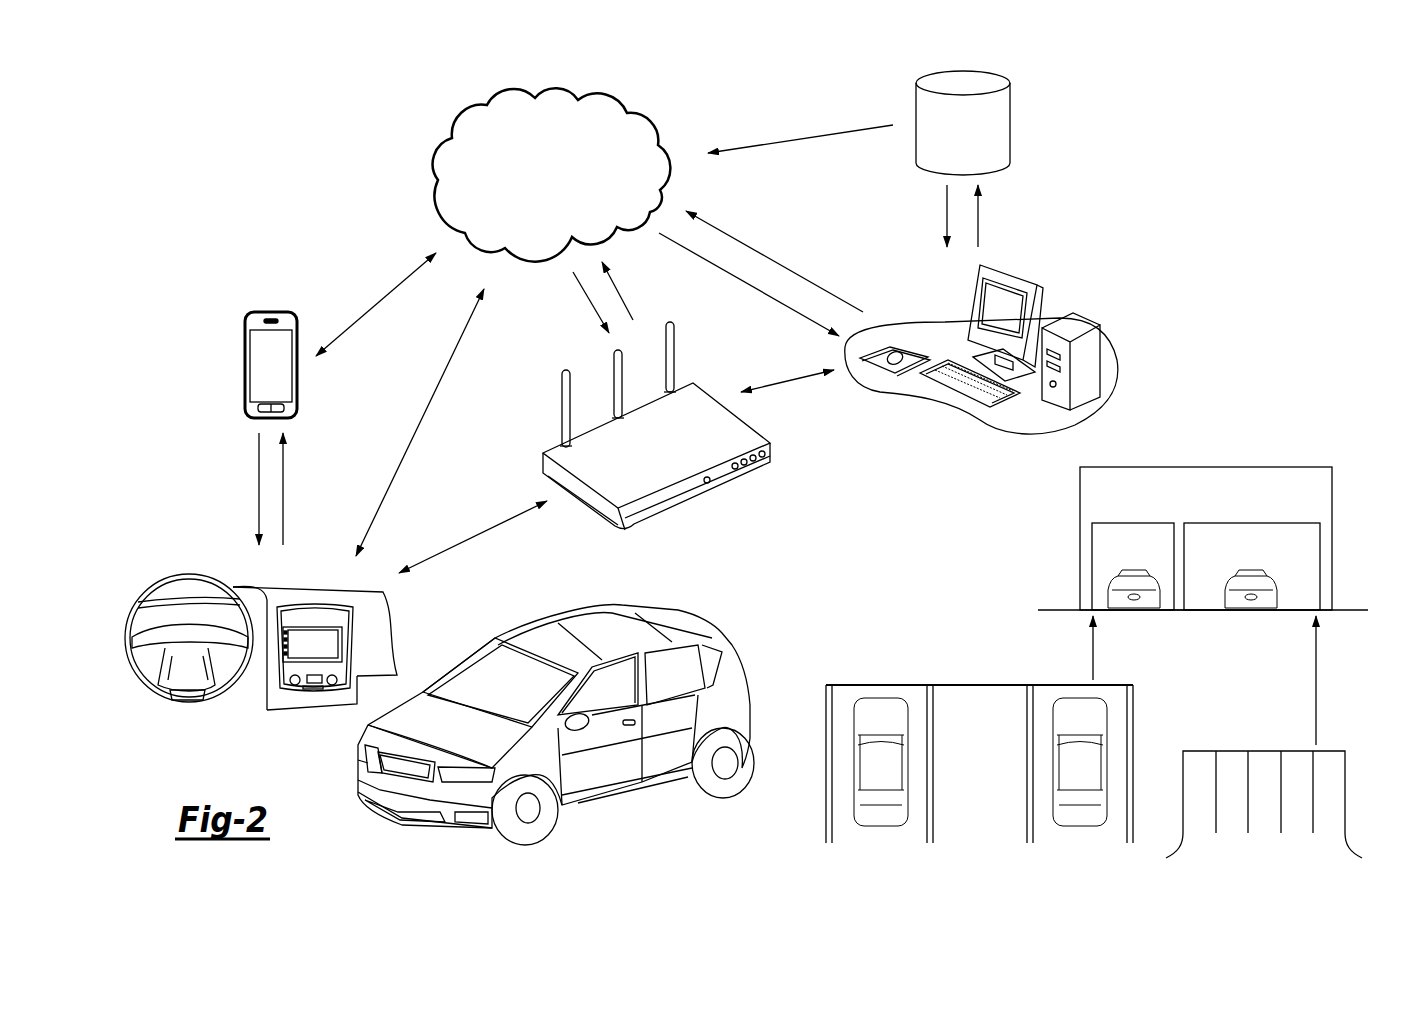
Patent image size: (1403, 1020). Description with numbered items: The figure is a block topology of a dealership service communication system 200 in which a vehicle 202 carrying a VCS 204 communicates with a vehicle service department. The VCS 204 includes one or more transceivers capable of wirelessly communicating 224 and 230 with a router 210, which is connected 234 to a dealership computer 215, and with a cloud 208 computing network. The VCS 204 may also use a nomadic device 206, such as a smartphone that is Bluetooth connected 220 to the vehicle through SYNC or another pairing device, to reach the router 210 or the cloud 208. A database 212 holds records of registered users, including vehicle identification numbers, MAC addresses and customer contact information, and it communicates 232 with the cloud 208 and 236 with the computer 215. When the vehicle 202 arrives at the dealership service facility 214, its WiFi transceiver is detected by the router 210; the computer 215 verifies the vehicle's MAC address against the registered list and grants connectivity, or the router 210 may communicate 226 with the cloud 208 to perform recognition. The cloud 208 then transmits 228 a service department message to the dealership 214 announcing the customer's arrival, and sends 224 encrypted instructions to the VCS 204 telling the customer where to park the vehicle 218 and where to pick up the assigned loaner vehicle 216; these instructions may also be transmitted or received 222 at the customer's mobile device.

The dealership service communication system 200 is at (278, 153).
The vehicle 202 is at (690, 612).
The VCS 204 is at (396, 615).
The nomadic device 206 is at (271, 312).
The cloud 208 is at (458, 118).
The router 210 is at (682, 505).
The database 212 is at (1010, 125).
The dealership service facility 214 is at (1203, 467).
The computer 215 is at (1020, 277).
The loaner vehicle 216 is at (980, 685).
The vehicle parking location 218 is at (1265, 750).
The Bluetooth connection 220 is at (270, 480).
The mobile device communication 222 is at (386, 294).
The wireless communication to VCS 224 is at (440, 402).
The router-cloud communication 226 is at (584, 296).
The service department message transmission 228 is at (756, 268).
The wireless communication to router 230 is at (490, 522).
The database-cloud communication 232 is at (810, 137).
The router-computer connection 234 is at (797, 380).
The database-computer communication 236 is at (963, 218).